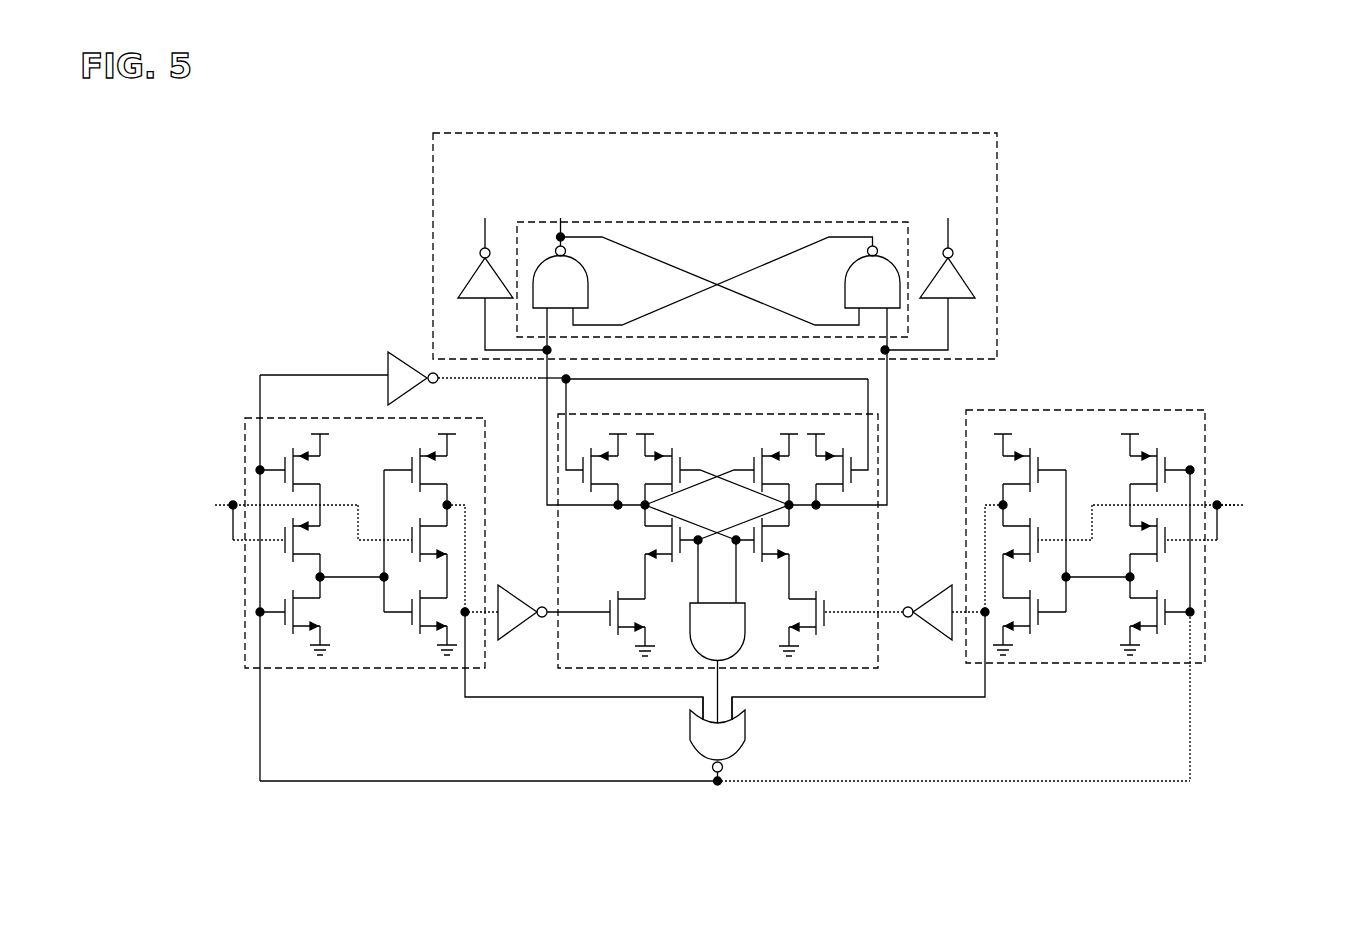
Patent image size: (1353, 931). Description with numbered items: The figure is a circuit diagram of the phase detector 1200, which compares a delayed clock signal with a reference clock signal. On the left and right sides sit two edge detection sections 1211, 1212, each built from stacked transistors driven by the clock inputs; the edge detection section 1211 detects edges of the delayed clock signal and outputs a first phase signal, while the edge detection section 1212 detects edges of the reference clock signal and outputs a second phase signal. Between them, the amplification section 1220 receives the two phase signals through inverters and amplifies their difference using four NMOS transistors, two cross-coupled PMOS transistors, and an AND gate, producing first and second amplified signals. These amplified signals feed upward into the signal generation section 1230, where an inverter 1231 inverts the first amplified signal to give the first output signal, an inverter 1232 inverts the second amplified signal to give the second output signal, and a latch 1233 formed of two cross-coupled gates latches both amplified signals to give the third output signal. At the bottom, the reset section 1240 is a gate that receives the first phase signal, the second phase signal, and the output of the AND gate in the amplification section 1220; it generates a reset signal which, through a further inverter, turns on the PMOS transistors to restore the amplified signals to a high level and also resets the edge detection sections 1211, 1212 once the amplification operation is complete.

The phase detector 1200 is at (226, 138).
The signal generation section 1230 is at (730, 133).
The inverter 1231 is at (458, 290).
The inverter 1232 is at (975, 290).
The latch 1233 is at (755, 222).
The edge detection section 1211 is at (255, 418).
The edge detection section 1212 is at (1110, 410).
The amplification section 1220 is at (713, 415).
The reset section 1240 is at (690, 745).